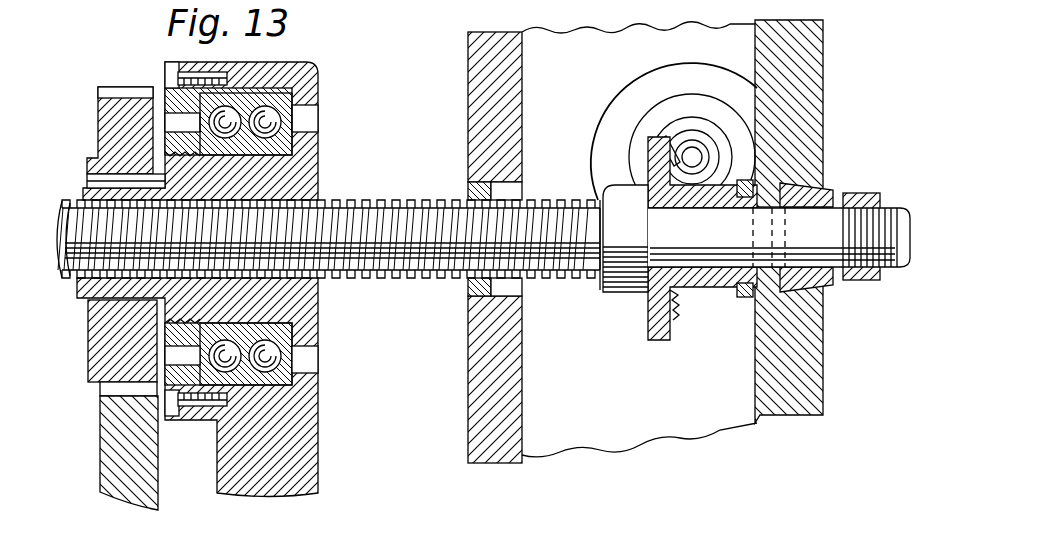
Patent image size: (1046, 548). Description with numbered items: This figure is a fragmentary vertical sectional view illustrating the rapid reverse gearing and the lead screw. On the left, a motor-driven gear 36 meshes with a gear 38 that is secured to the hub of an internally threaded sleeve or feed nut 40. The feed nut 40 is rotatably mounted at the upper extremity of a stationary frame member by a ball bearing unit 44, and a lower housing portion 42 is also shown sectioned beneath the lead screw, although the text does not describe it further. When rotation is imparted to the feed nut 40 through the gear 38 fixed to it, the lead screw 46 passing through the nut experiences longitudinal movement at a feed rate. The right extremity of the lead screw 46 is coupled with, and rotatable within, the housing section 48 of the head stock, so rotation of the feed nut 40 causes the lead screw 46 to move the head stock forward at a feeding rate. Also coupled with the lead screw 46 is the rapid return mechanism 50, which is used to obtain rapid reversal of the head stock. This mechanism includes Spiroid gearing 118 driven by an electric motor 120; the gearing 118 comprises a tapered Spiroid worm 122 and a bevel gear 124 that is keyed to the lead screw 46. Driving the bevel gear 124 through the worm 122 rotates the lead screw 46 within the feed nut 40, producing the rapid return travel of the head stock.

The gear 36 is at (140, 475).
The gear 38 is at (124, 113).
The feed nut 40 is at (298, 176).
The lower bearing housing 42 is at (300, 442).
The ball bearing unit 44 is at (293, 143).
The lead screw 46 is at (406, 200).
The housing section 48 is at (790, 80).
The rapid return mechanism 50 is at (595, 99).
The Spiroid gearing 118 is at (608, 303).
The electric motor 120 is at (598, 133).
The tapered Spiroid worm 122 is at (700, 137).
The bevel gear 124 is at (650, 338).